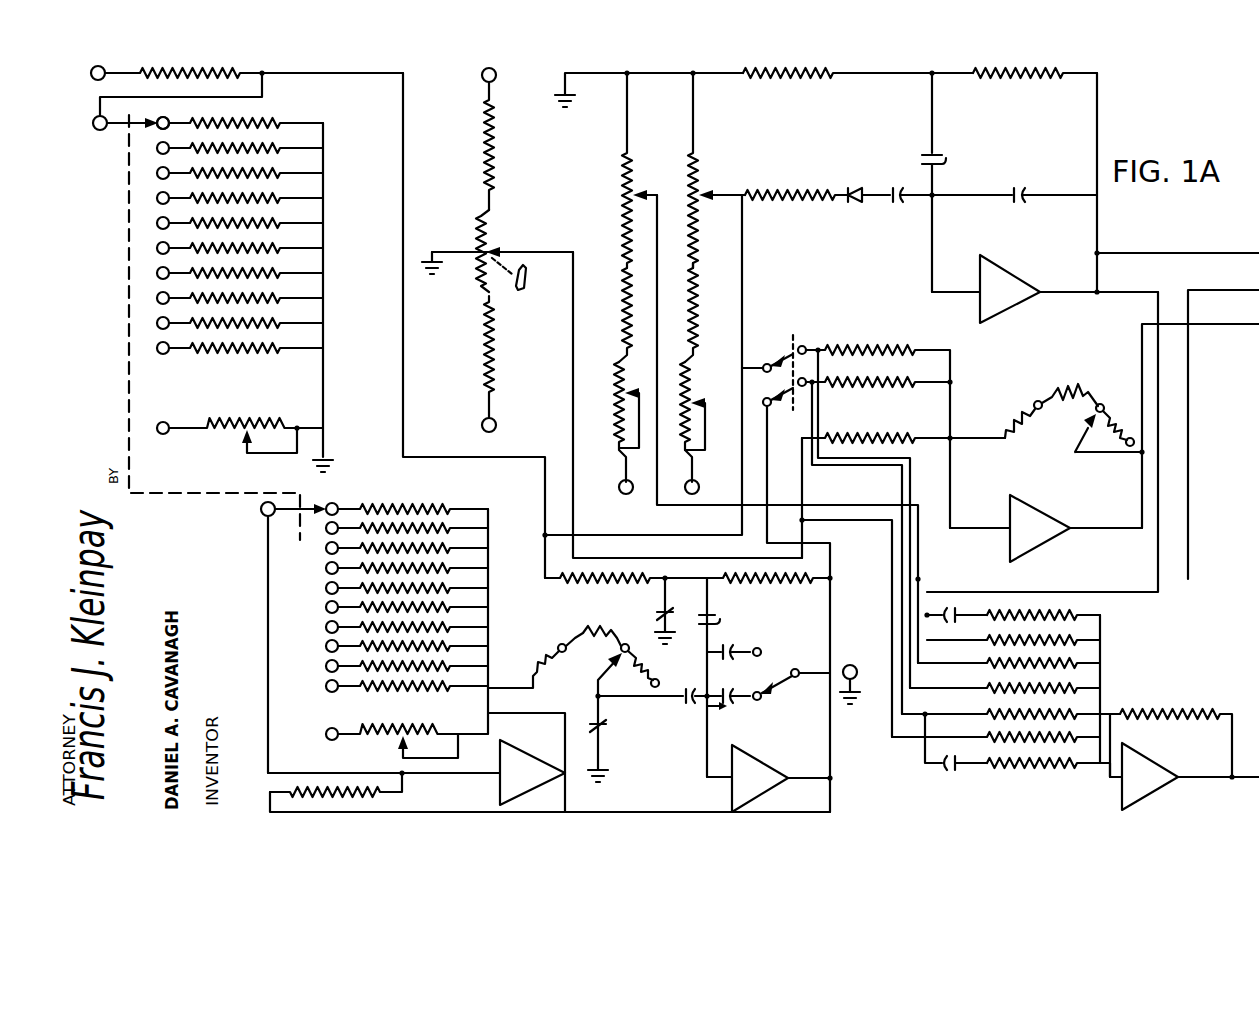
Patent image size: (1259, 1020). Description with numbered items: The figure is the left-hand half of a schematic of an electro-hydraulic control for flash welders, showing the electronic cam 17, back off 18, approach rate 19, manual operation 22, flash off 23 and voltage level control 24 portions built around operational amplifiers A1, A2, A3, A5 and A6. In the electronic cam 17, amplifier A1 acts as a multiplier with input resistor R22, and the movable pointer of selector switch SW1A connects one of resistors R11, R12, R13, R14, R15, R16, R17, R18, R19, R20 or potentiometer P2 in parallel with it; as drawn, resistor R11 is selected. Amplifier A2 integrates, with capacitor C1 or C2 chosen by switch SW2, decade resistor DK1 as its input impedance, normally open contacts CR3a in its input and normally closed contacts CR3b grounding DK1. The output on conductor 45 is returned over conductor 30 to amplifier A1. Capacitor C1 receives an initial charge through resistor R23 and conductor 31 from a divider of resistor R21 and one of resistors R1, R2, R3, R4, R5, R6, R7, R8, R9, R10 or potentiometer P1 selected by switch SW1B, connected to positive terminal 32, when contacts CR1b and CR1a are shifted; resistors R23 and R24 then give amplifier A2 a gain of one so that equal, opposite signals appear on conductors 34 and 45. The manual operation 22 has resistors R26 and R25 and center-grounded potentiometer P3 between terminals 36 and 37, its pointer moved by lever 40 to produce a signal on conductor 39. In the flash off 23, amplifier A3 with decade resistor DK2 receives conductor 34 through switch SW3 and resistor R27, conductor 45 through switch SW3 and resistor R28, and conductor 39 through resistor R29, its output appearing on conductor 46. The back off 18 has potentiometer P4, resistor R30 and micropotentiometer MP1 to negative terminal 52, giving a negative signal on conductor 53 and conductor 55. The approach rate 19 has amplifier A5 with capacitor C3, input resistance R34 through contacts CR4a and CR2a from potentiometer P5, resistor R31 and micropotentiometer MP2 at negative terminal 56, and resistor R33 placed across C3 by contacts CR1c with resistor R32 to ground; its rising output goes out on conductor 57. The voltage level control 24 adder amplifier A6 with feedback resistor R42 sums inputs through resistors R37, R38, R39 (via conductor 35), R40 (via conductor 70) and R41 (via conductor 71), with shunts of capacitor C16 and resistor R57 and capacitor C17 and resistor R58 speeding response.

The positive terminal 32 is at (91, 73).
The conductor 31 is at (401, 72).
The positive terminal 36 is at (482, 78).
The electronic cam 17 is at (428, 197).
The manual operation 22 is at (513, 200).
The back off 18 is at (630, 186).
The approach rate 19 is at (733, 178).
The conductor 53 is at (690, 238).
The manual control lever 40 is at (523, 274).
The negative terminal 37 is at (486, 425).
The conductor 39 is at (573, 400).
The negative terminal 52 is at (628, 496).
The negative terminal / conductor 56 is at (688, 497).
The conductor 34 is at (653, 538).
The conductor 57 is at (1174, 254).
The conductor 55 is at (1234, 290).
The conductor 46 is at (1236, 326).
The conductor 35 is at (902, 460).
The conductor 70 is at (838, 470).
The conductor 45 is at (822, 548).
The conductor 71 is at (884, 600).
The flash off 23 is at (1118, 544).
The voltage level control 24 is at (1232, 692).
The conductor 30 is at (670, 812).
The resistor R21 is at (209, 68).
The resistor R1 is at (280, 122).
The resistor R2 is at (283, 148).
The resistor R3 is at (283, 173).
The resistor R4 is at (283, 198).
The resistor R5 is at (283, 223).
The resistor R6 is at (283, 248).
The resistor R7 is at (283, 273).
The resistor R8 is at (283, 298).
The resistor R9 is at (283, 323).
The resistor R10 is at (283, 348).
The resistor R11 is at (410, 508).
The resistor R12 is at (452, 528).
The resistor R13 is at (452, 548).
The resistor R14 is at (452, 568).
The resistor R15 is at (452, 588).
The resistor R16 is at (452, 607).
The resistor R17 is at (452, 627).
The resistor R18 is at (452, 646).
The resistor R19 is at (452, 666).
The resistor R20 is at (370, 686).
The potentiometer P1 is at (205, 421).
The potentiometer P2 is at (424, 724).
The potentiometer P3 is at (478, 282).
The potentiometer P4 is at (613, 170).
The potentiometer P5 is at (716, 170).
The selector switch SW1A is at (262, 530).
The selector switch SW1B is at (110, 132).
The selector switch SW2 is at (798, 682).
The selector switch SW3 is at (772, 358).
The input resistor R22 is at (394, 789).
The resistor R23 is at (612, 589).
The resistor R24 is at (762, 598).
The resistor R25 is at (493, 346).
The resistor R26 is at (483, 138).
The resistor R27 is at (904, 348).
The resistor R28 is at (888, 385).
The resistor R29 is at (874, 435).
The resistor R30 is at (618, 270).
The resistor R31 is at (694, 278).
The resistor R32 is at (759, 68).
The resistor R33 is at (973, 70).
The fixed resistance R34 is at (766, 190).
The resistor R37 is at (1087, 641).
The resistor R38 is at (1087, 665).
The resistor R39 is at (1087, 690).
The resistor R40 is at (1082, 714).
The resistor R41 is at (986, 736).
The resistor R42 is at (1216, 708).
The resistor R57 is at (1087, 614).
The resistor R58 is at (1064, 764).
The micropotentiometer MP1 is at (612, 365).
The micropotentiometer MP2 is at (703, 370).
The decade resistor DK1 is at (560, 648).
The decade resistor DK2 is at (1032, 402).
The operational amplifier A1 is at (540, 784).
The operational amplifier A2 is at (732, 786).
The operational amplifier A3 is at (1045, 540).
The operational amplifier A5 is at (1015, 305).
The operational amplifier A6 is at (1155, 792).
The capacitor C1 is at (732, 696).
The capacitor C2 is at (742, 651).
The capacitor C3 is at (1043, 185).
The capacitor C16 is at (960, 610).
The capacitor C17 is at (950, 770).
The relay contacts CR1a is at (714, 620).
The relay contacts CR1b is at (658, 614).
The relay contacts CR1c is at (943, 154).
The relay contacts CR2a is at (914, 215).
The relay contacts CR3a is at (692, 702).
The relay contacts CR3b is at (602, 734).
The relay contacts CR4a is at (860, 194).